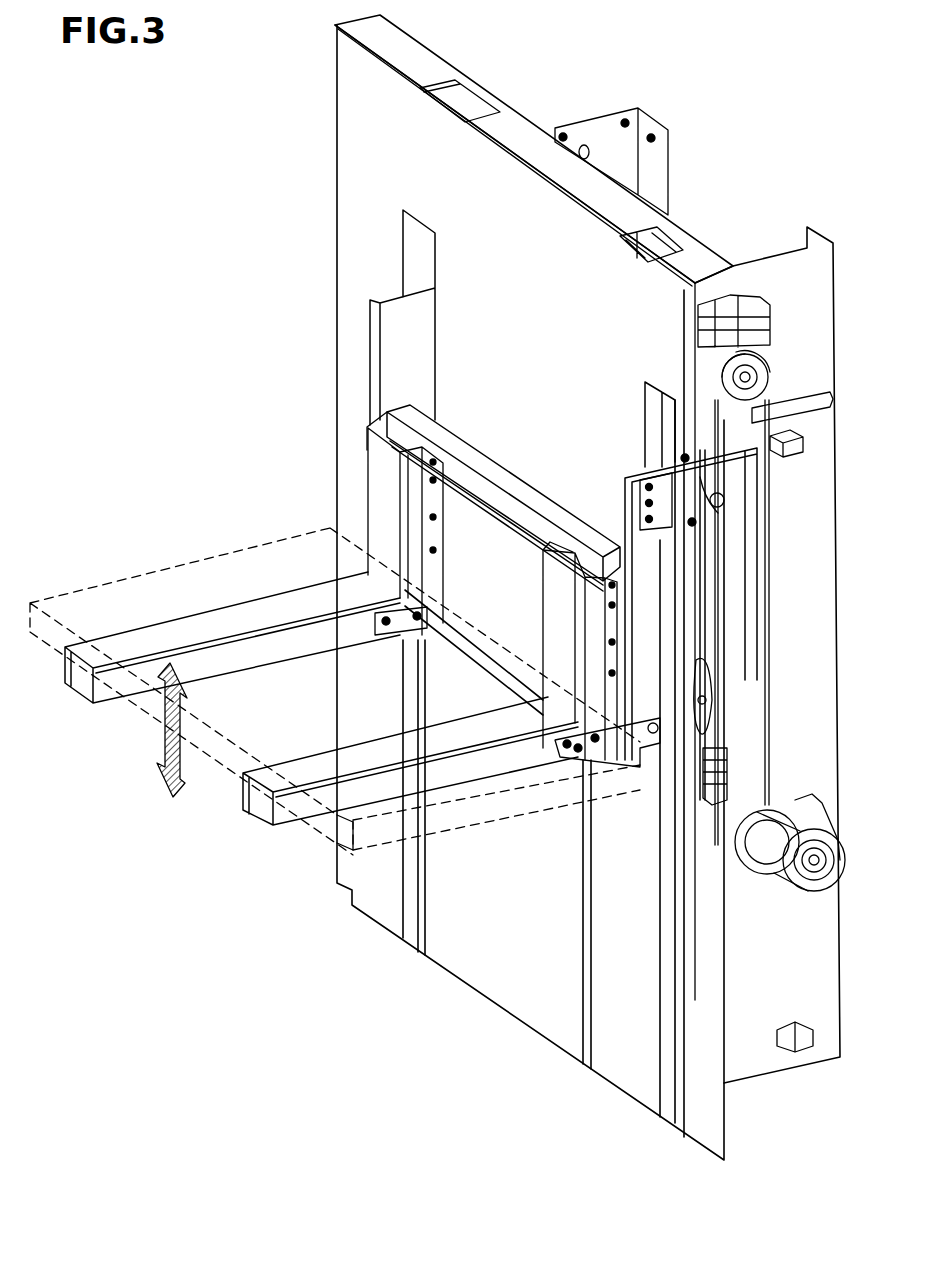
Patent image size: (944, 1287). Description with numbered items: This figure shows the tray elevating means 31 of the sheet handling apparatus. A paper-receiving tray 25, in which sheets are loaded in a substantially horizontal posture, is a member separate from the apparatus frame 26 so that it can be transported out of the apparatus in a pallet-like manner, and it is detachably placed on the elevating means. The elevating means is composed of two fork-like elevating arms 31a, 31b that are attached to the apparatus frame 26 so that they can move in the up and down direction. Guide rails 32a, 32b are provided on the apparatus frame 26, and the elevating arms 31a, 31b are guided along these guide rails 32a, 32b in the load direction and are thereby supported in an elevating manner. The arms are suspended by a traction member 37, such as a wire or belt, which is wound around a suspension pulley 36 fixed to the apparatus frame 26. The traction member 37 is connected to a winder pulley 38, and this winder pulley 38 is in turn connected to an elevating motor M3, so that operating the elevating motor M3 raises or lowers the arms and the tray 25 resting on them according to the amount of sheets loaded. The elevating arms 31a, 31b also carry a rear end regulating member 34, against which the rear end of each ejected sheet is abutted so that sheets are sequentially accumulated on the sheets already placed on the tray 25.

The tray 25 is at (198, 578).
The apparatus frame 26 is at (372, 140).
The tray elevating means 31 is at (495, 480).
The elevating arm 31a is at (258, 810).
The elevating arm 31b is at (80, 682).
The guide rail 32a is at (652, 398).
The guide rail 32b is at (410, 262).
The rear end regulating member 34 is at (378, 480).
The suspension pulley 36 is at (772, 352).
The traction member 37 is at (771, 604).
The winder pulley 38 is at (800, 892).
The elevating motor M3 is at (733, 782).